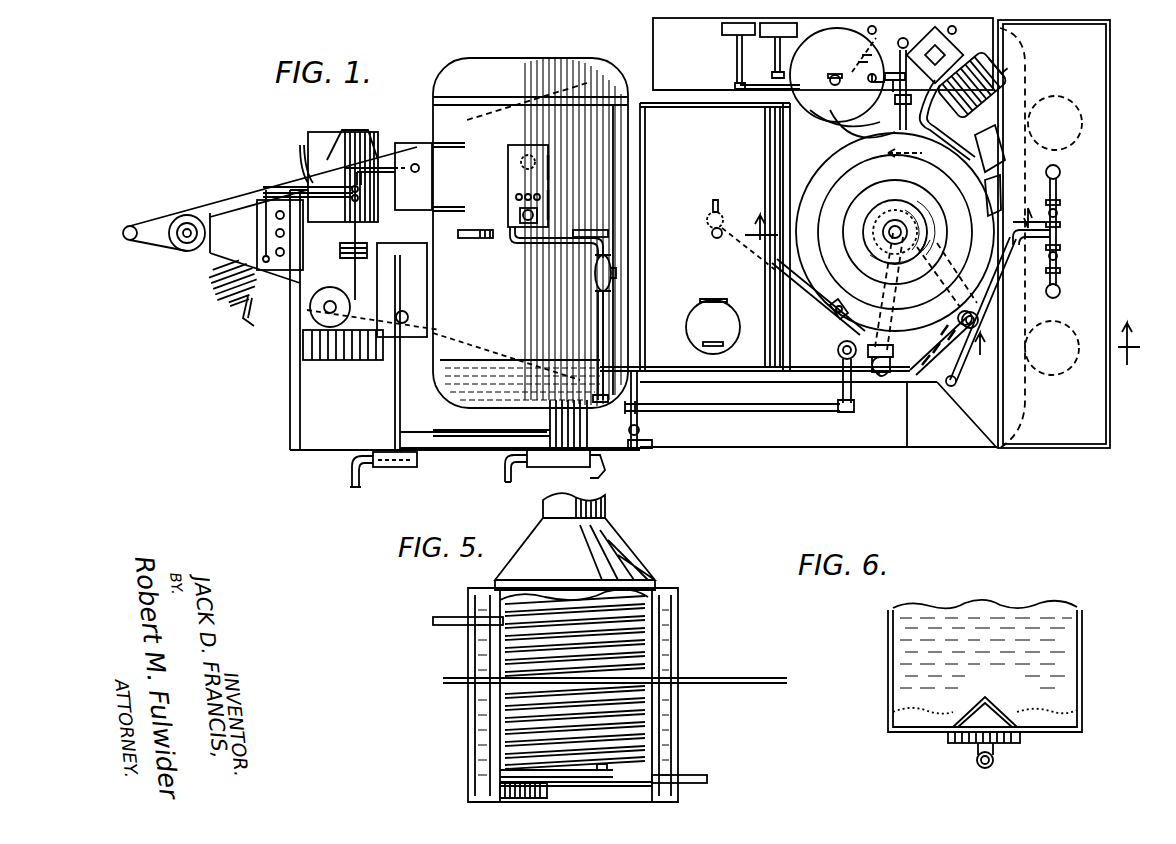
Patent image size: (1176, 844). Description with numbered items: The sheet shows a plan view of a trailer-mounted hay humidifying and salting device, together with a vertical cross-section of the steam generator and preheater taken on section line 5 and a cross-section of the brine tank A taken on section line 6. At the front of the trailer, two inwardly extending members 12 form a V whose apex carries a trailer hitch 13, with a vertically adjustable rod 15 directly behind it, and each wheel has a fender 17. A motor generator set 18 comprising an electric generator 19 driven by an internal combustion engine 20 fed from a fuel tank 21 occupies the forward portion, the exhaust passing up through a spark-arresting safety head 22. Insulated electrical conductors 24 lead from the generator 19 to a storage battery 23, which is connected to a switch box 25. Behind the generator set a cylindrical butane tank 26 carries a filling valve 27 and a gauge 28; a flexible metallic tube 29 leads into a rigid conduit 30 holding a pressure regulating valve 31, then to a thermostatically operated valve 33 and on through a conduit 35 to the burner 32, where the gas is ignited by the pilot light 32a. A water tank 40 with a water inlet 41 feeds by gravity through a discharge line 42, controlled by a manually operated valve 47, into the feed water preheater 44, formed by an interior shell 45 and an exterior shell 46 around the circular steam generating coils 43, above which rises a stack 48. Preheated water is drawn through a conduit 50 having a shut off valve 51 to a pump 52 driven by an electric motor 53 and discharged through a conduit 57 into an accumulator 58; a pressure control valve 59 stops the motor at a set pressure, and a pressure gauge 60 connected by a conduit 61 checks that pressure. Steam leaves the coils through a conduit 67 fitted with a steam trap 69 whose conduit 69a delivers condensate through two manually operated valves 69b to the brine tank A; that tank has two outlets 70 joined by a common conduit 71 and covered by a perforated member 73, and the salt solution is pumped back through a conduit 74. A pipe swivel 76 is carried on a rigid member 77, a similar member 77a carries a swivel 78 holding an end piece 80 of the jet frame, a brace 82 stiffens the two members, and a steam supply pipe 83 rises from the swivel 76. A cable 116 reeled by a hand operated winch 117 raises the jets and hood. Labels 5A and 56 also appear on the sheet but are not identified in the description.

In FIG. 1, the cabinet 5A is at (1097, 280).
In FIG. 1, the section line 6— 6 is at (1058, 355).
In FIG. 1, the section line 5— 5 is at (760, 239).
In FIG. 1, the inwardly extending members 12 is at (248, 202).
In FIG. 1, the trailer hitch 13 is at (176, 220).
In FIG. 1, the vertically adjustable rod 15 is at (187, 236).
In FIG. 1, the fender 17 is at (665, 42).
In FIG. 1, the motor generator set 18 is at (403, 150).
In FIG. 1, the electric generator 19 is at (345, 140).
In FIG. 1, the internal combustion engine 20 is at (345, 362).
In FIG. 1, the fuel tank 21 is at (400, 280).
In FIG. 1, the safety head 22 is at (322, 313).
In FIG. 1, the storage battery 23 is at (257, 235).
In FIG. 1, the insulated electrical conductors 24 is at (305, 158).
In FIG. 1, the switch box 25 is at (510, 111).
In FIG. 1, the butane tank 26 is at (515, 325).
In FIG. 1, the filling valve 27 is at (522, 200).
In FIG. 1, the gauge 28 is at (520, 163).
In FIG. 1, the flexible metallic tube 29 is at (518, 246).
In FIG. 1, the rigid conduit 30 is at (603, 318).
In FIG. 1, the pressure regulating valve 31 is at (593, 283).
In FIG. 1, the burner 32 is at (905, 218).
In FIG. 5, the burner 32 is at (500, 773).
In FIG. 5, the pilot light 32a is at (540, 794).
In FIG. 1, the thermostatically operated valve 33 is at (928, 352).
In FIG. 1, the conduit 35 is at (938, 290).
In FIG. 5, the conduit 35 is at (631, 783).
In FIG. 1, the water tank 40 is at (730, 193).
In FIG. 1, the water inlet 41 is at (705, 330).
In FIG. 1, the discharge line 42 is at (812, 312).
In FIG. 5, the discharge line 42 is at (697, 781).
In FIG. 5, the steam generating coils 43 is at (625, 607).
In FIG. 5, the feed water preheater 44 is at (655, 640).
In FIG. 5, the interior shell 45 is at (655, 725).
In FIG. 5, the exterior shell 46 is at (680, 745).
In FIG. 1, the manually operated valve 47 is at (878, 300).
In FIG. 1, the stack 48 is at (885, 182).
In FIG. 5, the stack 48 is at (605, 508).
In FIG. 1, the suction conduit 50 is at (922, 156).
In FIG. 5, the suction conduit 50 is at (455, 627).
In FIG. 1, the shut off valve 51 is at (900, 58).
In FIG. 1, the pump 52 is at (952, 40).
In FIG. 1, the electric motor 53 is at (965, 72).
In FIG. 5, the tube 56 is at (655, 665).
In FIG. 1, the conduit 57 is at (886, 80).
In FIG. 1, the pressure tank 58 is at (815, 107).
In FIG. 1, the pressure control valve 59 is at (837, 74).
In FIG. 1, the pressure gauge 60 is at (735, 30).
In FIG. 1, the conduit 61 is at (740, 70).
In FIG. 1, the steam discharge conduit 67 is at (810, 412).
In FIG. 1, the steam trap 69 is at (838, 352).
In FIG. 1, the condensate conduit 69a is at (997, 320).
In FIG. 1, the manually operated valve 69b is at (1056, 190).
In FIG. 1, the outlets 70 is at (1063, 130).
In FIG. 6, the outlets 70 is at (990, 740).
In FIG. 6, the common conduit 71 is at (976, 762).
In FIG. 6, the perforated member 73 is at (993, 703).
In FIG. 1, the conduit 74 is at (637, 424).
In FIG. 1, the pipe swivel 76 is at (578, 467).
In FIG. 1, the rigid member 77 is at (558, 425).
In FIG. 1, the rigid member 77a is at (395, 418).
In FIG. 1, the swivel 78 is at (390, 468).
In FIG. 1, the end piece 80 is at (352, 485).
In FIG. 1, the brace 82 is at (470, 440).
In FIG. 1, the steam supply pipe 83 is at (508, 478).
In FIG. 1, the cable 116 is at (242, 312).
In FIG. 1, the hand operated winch 117 is at (212, 288).
In FIG. 6, the brine tank A is at (1075, 685).